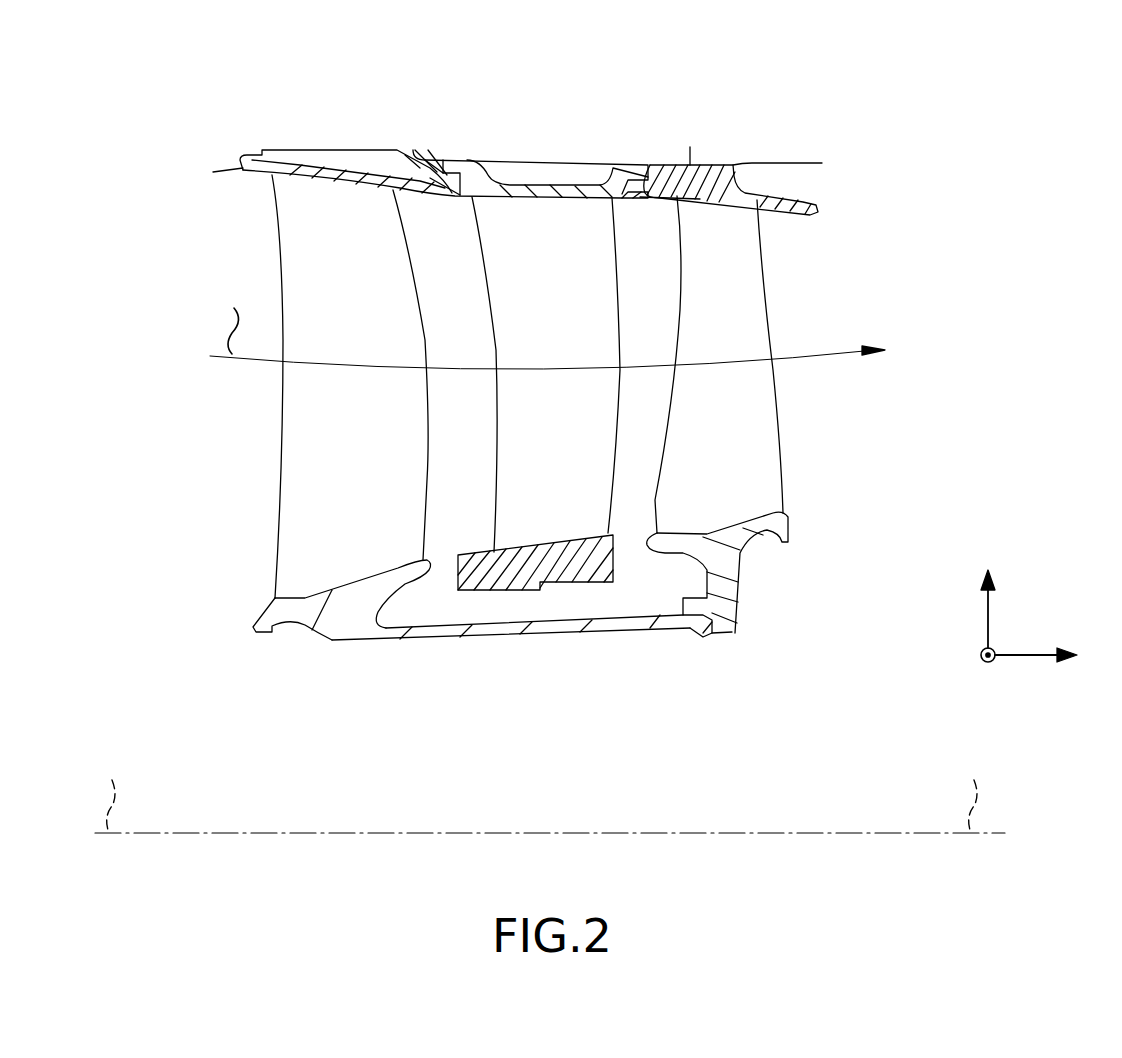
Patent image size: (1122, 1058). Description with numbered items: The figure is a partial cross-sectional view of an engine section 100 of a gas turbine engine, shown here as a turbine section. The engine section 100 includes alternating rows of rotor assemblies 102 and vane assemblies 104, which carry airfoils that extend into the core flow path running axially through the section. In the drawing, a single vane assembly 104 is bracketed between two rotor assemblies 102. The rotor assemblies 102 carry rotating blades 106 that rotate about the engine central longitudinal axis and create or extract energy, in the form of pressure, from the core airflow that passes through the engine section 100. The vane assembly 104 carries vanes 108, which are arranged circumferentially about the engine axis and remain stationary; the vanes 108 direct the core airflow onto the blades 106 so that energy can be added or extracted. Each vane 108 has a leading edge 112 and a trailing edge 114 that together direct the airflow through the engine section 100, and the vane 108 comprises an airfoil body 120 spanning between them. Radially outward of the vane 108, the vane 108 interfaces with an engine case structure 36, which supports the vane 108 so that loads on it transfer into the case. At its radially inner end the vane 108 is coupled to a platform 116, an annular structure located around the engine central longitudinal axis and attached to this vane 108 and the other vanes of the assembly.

The engine section 100 is at (104, 132).
The rotor assembly 102 is at (413, 122).
The vane assembly 104 is at (640, 122).
The rotating blade 106 is at (298, 470).
The vane 108 is at (580, 374).
The leading edge 112 is at (498, 453).
The trailing edge 114 is at (622, 322).
The platform 116 is at (497, 578).
The airfoil body 120 is at (572, 340).
The engine case structure 36 is at (615, 193).